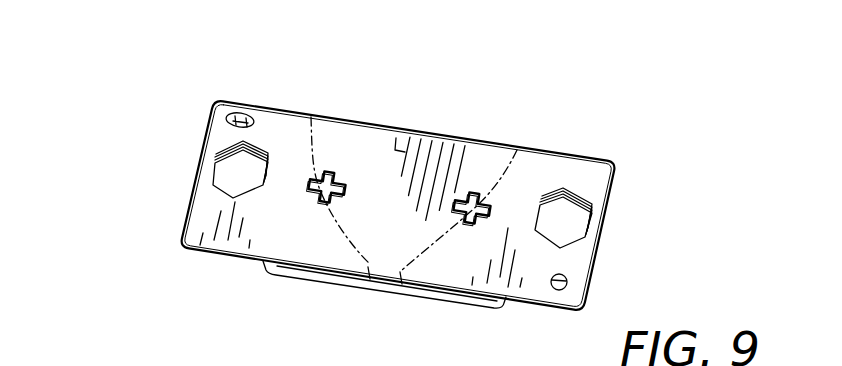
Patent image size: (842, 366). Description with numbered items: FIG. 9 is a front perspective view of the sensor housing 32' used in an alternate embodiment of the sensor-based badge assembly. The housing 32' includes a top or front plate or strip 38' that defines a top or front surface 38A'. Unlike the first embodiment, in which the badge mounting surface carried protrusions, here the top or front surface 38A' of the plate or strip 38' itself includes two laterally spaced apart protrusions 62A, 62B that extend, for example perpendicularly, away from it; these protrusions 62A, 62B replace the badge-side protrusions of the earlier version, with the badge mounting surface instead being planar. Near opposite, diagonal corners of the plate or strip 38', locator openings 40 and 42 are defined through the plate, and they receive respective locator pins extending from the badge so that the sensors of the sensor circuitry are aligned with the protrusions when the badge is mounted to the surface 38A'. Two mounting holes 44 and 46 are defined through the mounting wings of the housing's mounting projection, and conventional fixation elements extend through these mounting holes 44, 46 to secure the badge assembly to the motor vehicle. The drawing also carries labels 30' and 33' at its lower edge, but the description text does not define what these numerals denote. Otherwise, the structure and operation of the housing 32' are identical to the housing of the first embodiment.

The housing 32' is at (341, 179).
The top or front plate or strip 38' is at (398, 200).
The top or front surface 38A' is at (427, 105).
The locator opening 40 is at (241, 113).
The locator opening 42 is at (557, 291).
The mounting hole 44 is at (210, 176).
The mounting hole 46 is at (592, 228).
The protrusion 62A is at (330, 172).
The protrusion 62B is at (473, 192).
The base 30' is at (28, 347).
The base portion 33' is at (136, 362).